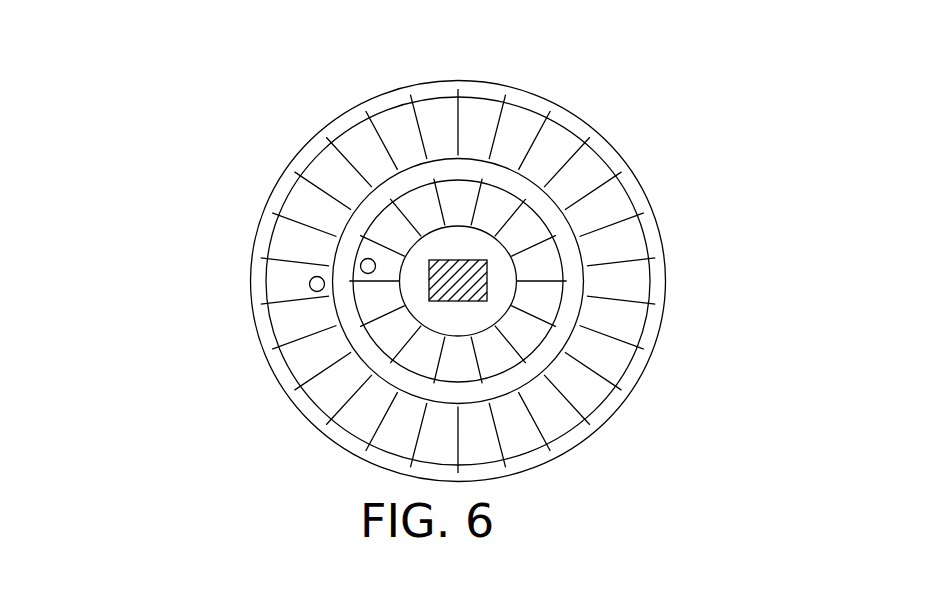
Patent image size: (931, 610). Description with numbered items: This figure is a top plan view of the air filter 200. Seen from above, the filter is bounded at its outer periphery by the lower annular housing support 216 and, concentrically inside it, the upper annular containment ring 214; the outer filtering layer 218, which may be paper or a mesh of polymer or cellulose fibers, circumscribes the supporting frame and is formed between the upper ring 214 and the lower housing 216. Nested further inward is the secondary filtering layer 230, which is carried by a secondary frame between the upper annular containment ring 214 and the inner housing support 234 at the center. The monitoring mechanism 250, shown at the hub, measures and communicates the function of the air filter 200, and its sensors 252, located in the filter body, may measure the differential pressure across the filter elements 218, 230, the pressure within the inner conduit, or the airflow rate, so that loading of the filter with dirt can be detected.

The air filter 200 is at (208, 128).
The upper annular containment ring 214 is at (547, 210).
The lower annular housing support 216 is at (537, 103).
The outer filtering layer 218 is at (318, 348).
The secondary filtering layer 230 is at (518, 320).
The inner housing support 234 is at (487, 282).
The monitoring mechanism 250 is at (460, 265).
The sensors 252 is at (360, 260).